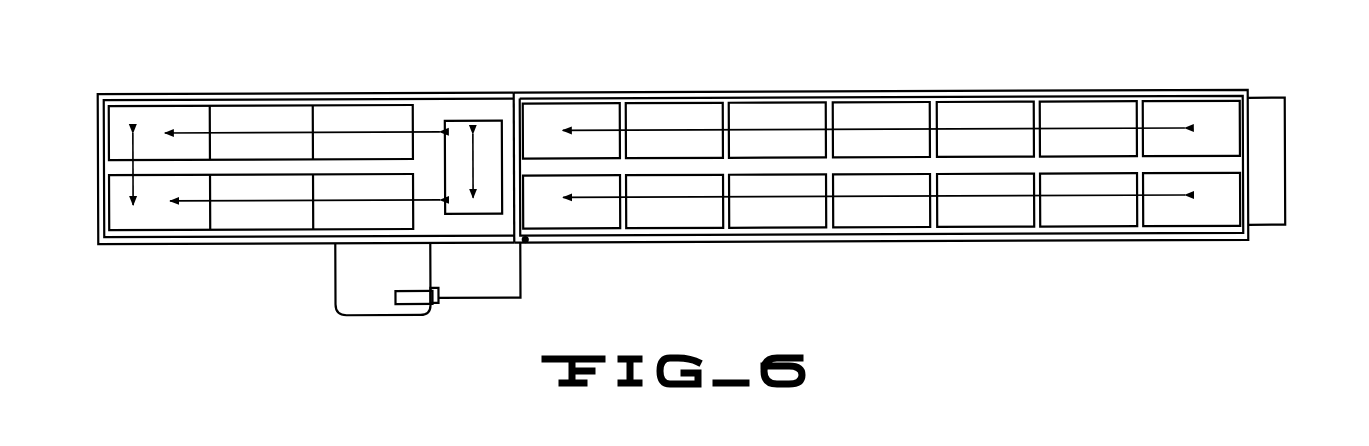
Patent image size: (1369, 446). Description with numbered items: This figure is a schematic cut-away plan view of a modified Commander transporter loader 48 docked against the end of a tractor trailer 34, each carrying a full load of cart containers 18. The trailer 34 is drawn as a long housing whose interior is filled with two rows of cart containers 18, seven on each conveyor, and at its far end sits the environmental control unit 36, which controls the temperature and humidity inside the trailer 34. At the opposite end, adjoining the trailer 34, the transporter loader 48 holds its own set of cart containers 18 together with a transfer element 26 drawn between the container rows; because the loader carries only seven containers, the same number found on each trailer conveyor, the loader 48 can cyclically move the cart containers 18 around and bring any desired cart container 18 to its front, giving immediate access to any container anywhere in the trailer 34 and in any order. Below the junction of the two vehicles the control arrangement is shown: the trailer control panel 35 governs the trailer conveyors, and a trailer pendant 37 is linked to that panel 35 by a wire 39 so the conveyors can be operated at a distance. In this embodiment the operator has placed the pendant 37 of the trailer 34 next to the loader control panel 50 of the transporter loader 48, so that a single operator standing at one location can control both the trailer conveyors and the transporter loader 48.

The cart container 18 is at (328, 104).
The transfer chamber 26 is at (472, 118).
The tractor trailer 34 is at (1238, 90).
The trailer control panel 35 is at (525, 241).
The environmental control unit 36 is at (1275, 142).
The trailer pendant 37 is at (438, 303).
The wire 39 is at (520, 288).
The Commander transporter loader 48 is at (165, 249).
The loader control panel 50 is at (400, 306).